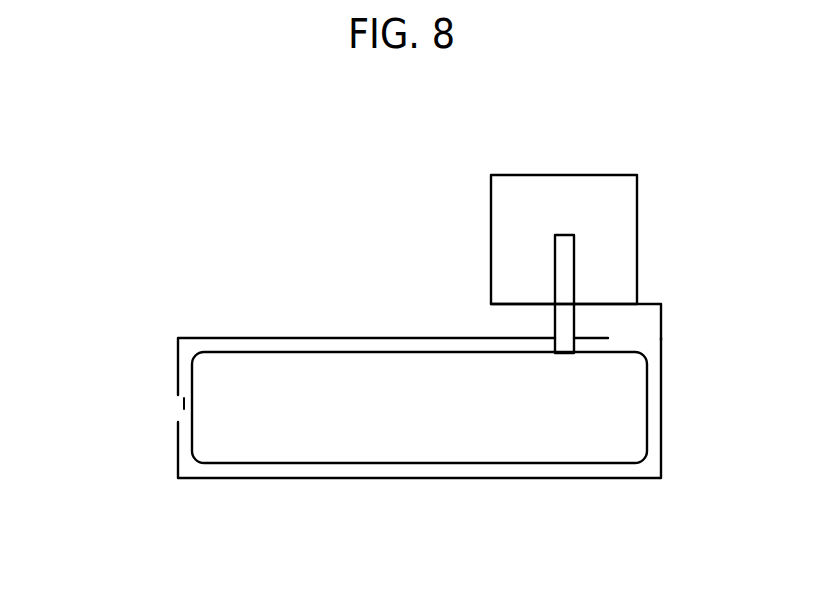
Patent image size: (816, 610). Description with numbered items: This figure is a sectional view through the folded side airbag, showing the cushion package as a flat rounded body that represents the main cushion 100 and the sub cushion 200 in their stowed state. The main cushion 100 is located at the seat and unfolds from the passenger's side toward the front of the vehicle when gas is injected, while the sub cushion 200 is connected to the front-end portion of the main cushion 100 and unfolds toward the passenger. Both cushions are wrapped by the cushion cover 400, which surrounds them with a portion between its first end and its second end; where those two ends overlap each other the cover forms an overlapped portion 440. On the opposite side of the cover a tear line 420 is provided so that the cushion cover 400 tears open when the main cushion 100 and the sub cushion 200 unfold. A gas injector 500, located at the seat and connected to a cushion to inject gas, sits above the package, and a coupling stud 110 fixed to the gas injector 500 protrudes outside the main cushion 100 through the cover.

The main cushion 100 is at (419, 465).
The sub cushion 200 is at (343, 437).
The coupling stud 110 is at (567, 325).
The cushion cover 400 is at (609, 478).
The tear line 420 is at (184, 403).
The overlapped portion 440 is at (620, 303).
The gas injector 500 is at (623, 209).